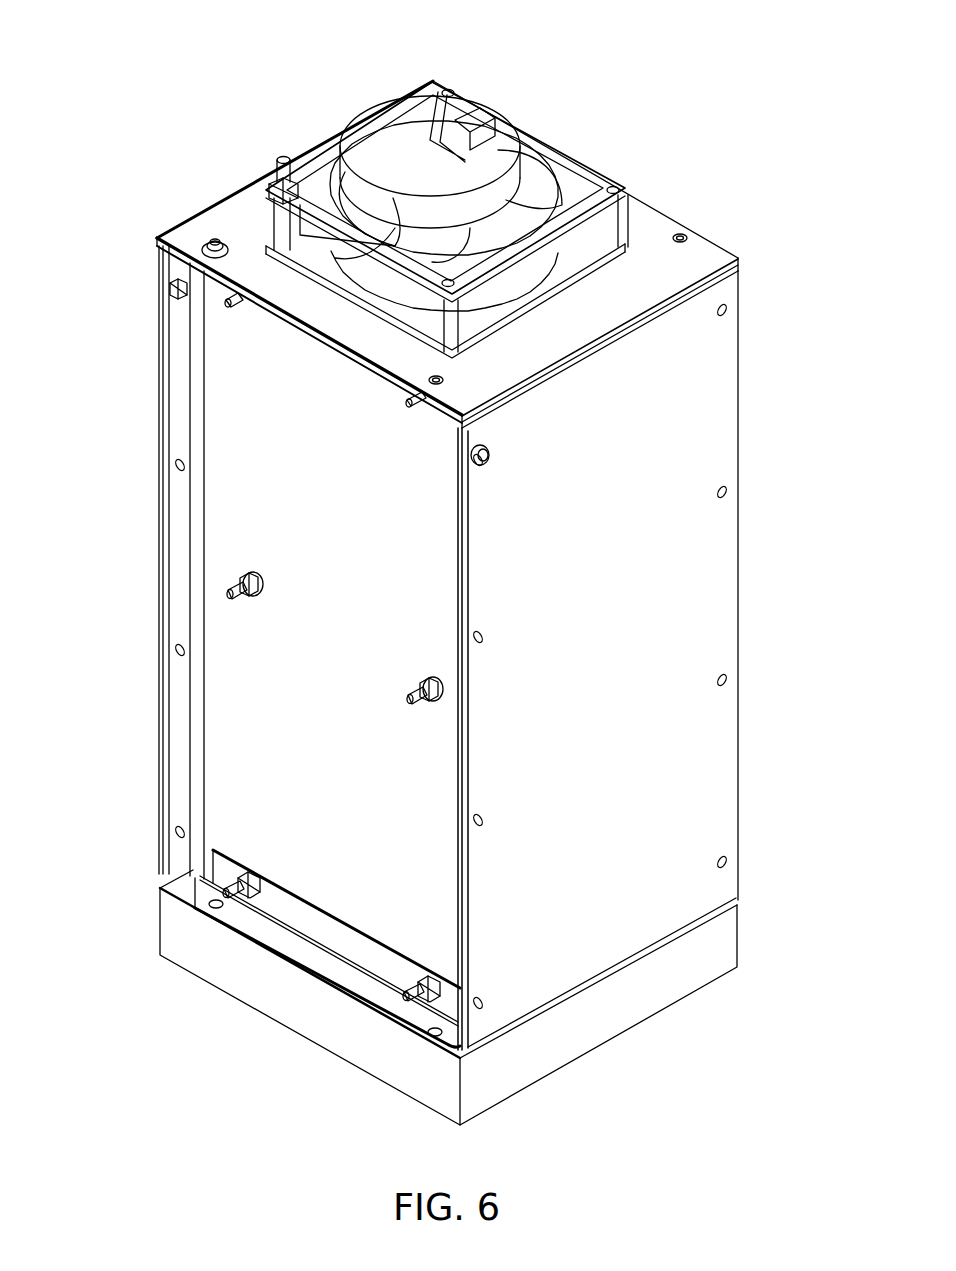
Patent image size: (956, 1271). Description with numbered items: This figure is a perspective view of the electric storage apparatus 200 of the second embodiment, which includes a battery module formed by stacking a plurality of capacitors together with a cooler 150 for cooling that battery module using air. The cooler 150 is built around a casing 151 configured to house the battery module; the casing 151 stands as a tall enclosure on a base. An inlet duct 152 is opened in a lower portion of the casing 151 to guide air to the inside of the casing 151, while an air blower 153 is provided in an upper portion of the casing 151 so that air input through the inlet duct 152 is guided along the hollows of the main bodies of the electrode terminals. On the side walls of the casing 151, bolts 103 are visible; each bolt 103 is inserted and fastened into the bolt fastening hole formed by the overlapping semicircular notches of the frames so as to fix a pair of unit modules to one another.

The electric storage apparatus 200 is at (612, 101).
The cooler 150 is at (623, 170).
The air blower 153 is at (372, 152).
The casing 151 is at (718, 396).
The inlet duct 152 is at (612, 1014).
The bolt 103 is at (228, 598).